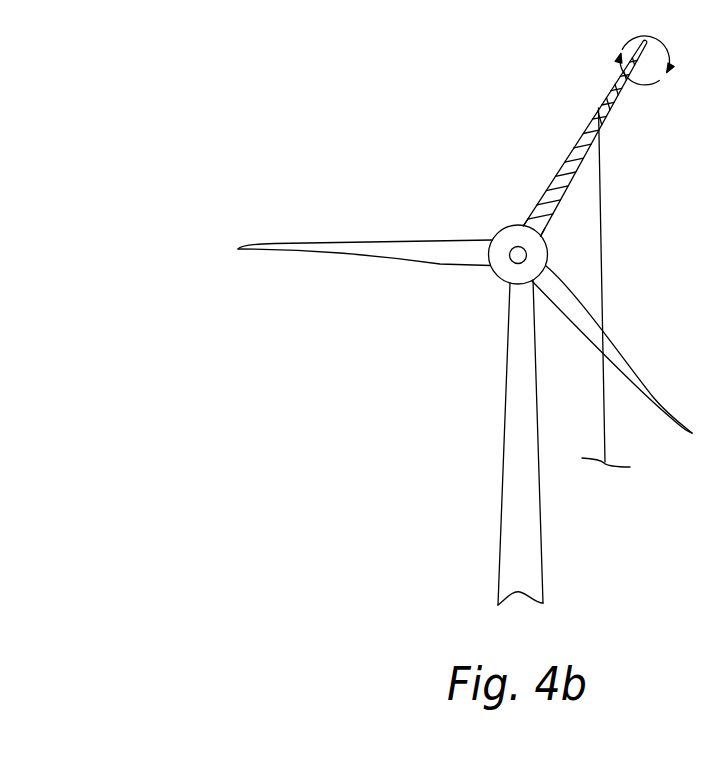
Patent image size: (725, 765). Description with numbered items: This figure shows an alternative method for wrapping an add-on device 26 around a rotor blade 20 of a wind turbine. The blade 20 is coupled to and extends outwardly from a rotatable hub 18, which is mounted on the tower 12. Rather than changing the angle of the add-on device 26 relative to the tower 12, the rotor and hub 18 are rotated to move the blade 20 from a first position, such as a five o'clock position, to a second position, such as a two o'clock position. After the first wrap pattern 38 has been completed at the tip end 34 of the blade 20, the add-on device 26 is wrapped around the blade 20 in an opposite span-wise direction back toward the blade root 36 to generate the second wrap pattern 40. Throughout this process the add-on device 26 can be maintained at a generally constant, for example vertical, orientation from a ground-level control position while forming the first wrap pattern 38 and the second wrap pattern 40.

The tower 12 is at (540, 505).
The hub 18 is at (505, 226).
The rotor blade 20 is at (615, 112).
The add-on device 26 is at (600, 210).
The tip end 34 is at (667, 52).
The blade root 36 is at (543, 235).
The first wrap pattern 38 is at (548, 194).
The second wrap pattern 40 is at (600, 107).